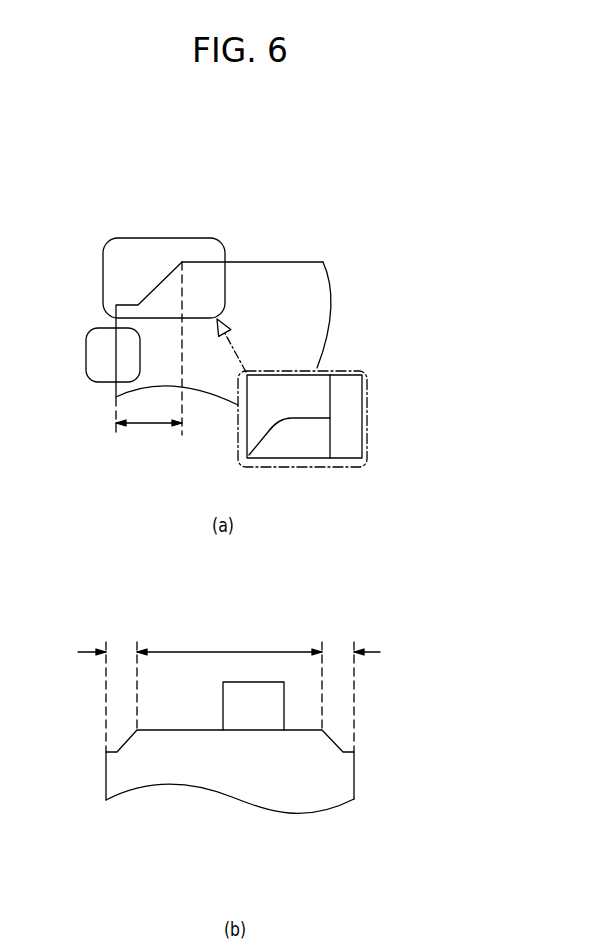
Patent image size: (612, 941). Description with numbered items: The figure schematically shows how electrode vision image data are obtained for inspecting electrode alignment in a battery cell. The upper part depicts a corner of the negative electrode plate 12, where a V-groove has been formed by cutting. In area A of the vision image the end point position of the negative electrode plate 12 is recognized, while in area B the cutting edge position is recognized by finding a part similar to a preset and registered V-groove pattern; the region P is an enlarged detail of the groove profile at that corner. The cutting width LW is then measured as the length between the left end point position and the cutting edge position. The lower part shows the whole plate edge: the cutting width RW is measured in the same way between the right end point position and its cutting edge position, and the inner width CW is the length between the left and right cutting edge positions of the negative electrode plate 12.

The negative electrode plate 12 is at (287, 280).
The area A is at (98, 387).
The area B is at (214, 237).
The partial enlarged view P is at (350, 408).
The cutting width LW is at (130, 586).
The inner width CW is at (229, 638).
The cutting width RW is at (351, 686).